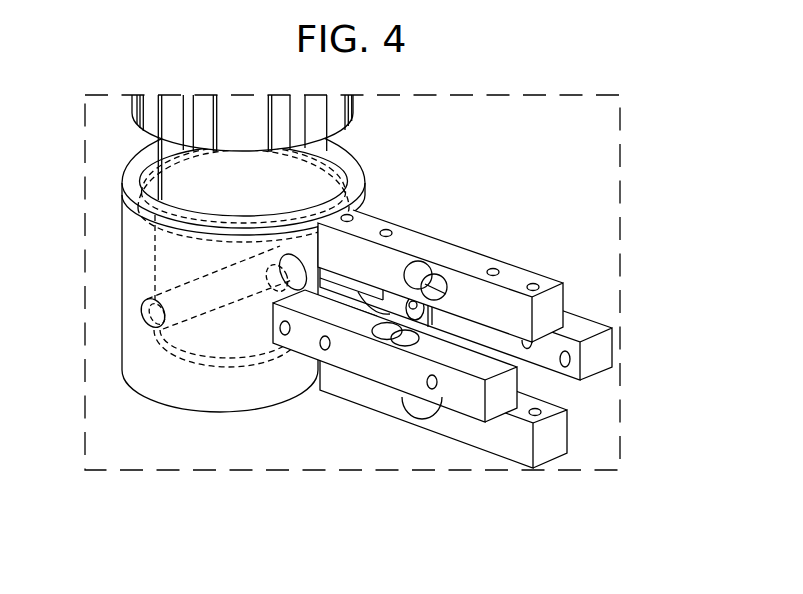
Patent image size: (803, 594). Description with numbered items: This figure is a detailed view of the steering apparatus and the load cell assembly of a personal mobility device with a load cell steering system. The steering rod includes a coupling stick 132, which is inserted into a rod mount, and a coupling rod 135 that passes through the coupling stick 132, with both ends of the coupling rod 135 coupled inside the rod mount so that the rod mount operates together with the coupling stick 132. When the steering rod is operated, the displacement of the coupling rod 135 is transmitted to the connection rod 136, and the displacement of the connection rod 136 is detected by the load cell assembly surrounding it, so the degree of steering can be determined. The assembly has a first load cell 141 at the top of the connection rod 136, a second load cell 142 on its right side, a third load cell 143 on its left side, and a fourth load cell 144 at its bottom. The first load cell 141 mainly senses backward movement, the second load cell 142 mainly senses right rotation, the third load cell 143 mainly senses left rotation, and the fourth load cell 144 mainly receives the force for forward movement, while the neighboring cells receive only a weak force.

The coupling stick 132 is at (202, 182).
The coupling rod 135 is at (203, 308).
The connection rod 136 is at (428, 316).
The first load cell 141 is at (557, 298).
The second load cell 142 is at (598, 357).
The third load cell 143 is at (498, 398).
The fourth load cell 144 is at (552, 438).